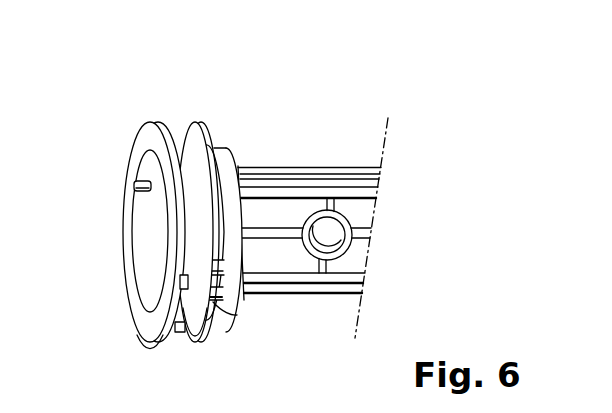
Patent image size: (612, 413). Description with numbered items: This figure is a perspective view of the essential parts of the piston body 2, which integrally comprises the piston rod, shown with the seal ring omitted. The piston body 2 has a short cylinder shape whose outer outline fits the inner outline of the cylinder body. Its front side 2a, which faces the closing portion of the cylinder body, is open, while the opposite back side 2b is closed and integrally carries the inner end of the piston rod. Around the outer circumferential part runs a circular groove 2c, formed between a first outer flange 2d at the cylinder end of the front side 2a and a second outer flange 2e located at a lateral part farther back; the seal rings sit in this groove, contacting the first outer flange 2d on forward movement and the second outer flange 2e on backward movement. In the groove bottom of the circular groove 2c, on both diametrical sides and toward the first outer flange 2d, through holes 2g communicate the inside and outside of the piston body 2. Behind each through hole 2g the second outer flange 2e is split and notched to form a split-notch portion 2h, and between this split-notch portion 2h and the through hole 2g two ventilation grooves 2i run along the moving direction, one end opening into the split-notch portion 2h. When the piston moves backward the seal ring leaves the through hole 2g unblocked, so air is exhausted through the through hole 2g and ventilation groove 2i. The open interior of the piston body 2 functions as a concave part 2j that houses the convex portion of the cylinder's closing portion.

The piston body 2 is at (186, 231).
The front side 2a is at (132, 297).
The back side 2b is at (237, 164).
The circular groove 2c is at (184, 147).
The first outer flange 2d is at (150, 338).
The second outer flange 2e is at (210, 333).
The through hole 2g is at (137, 194).
The split-notch portion 2h is at (230, 315).
The ventilation groove 2i is at (221, 274).
The concave part 2j is at (143, 238).